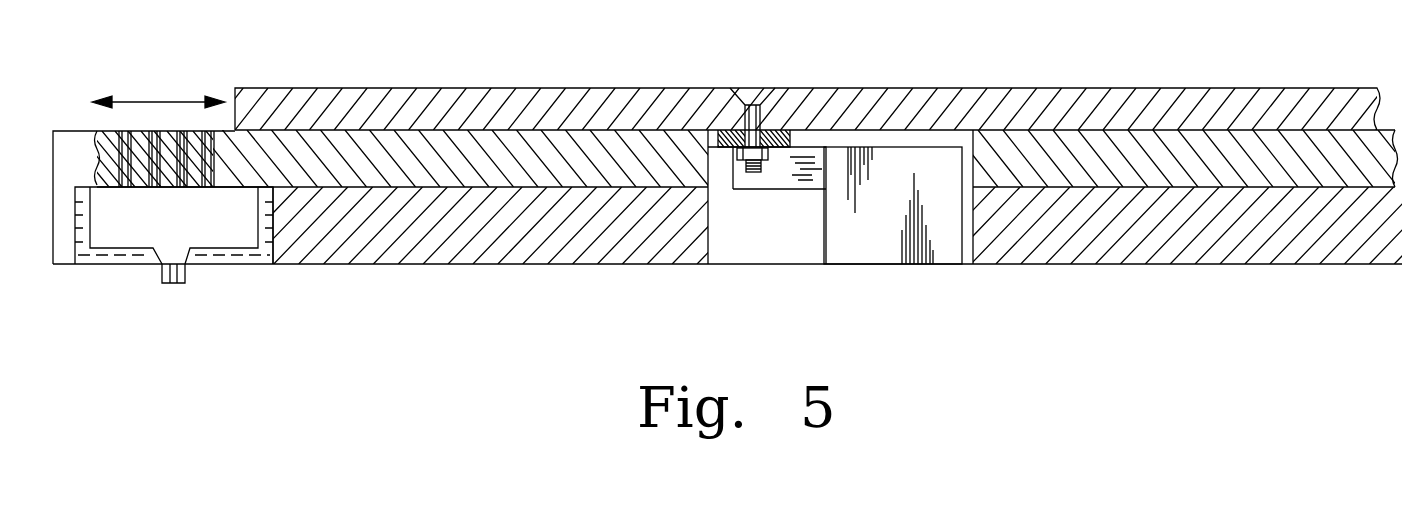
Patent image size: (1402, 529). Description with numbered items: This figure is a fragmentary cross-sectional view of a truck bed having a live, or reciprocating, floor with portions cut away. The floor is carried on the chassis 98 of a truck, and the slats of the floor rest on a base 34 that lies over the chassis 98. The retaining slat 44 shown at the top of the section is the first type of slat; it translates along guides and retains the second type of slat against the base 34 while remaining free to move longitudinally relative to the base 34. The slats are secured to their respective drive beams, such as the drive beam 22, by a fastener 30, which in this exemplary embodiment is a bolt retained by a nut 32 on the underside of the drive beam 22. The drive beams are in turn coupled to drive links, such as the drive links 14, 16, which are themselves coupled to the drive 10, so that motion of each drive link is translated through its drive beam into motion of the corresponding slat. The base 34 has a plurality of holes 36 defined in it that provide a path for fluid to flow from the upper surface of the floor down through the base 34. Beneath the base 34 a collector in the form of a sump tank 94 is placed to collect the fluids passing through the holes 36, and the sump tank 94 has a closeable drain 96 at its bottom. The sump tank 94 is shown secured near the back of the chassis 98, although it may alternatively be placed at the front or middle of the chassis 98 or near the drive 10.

The drive 10 is at (855, 232).
The drive link 14 is at (717, 165).
The drive link 16 is at (820, 150).
The drive beam 22 is at (782, 130).
The fastener 30 is at (750, 93).
The nut 32 is at (755, 174).
The base 34 is at (463, 153).
The holes 36 is at (127, 133).
The retaining slat 44 is at (428, 93).
The sump tank 94 is at (118, 264).
The closeable drain 96 is at (185, 275).
The chassis 98 is at (538, 250).